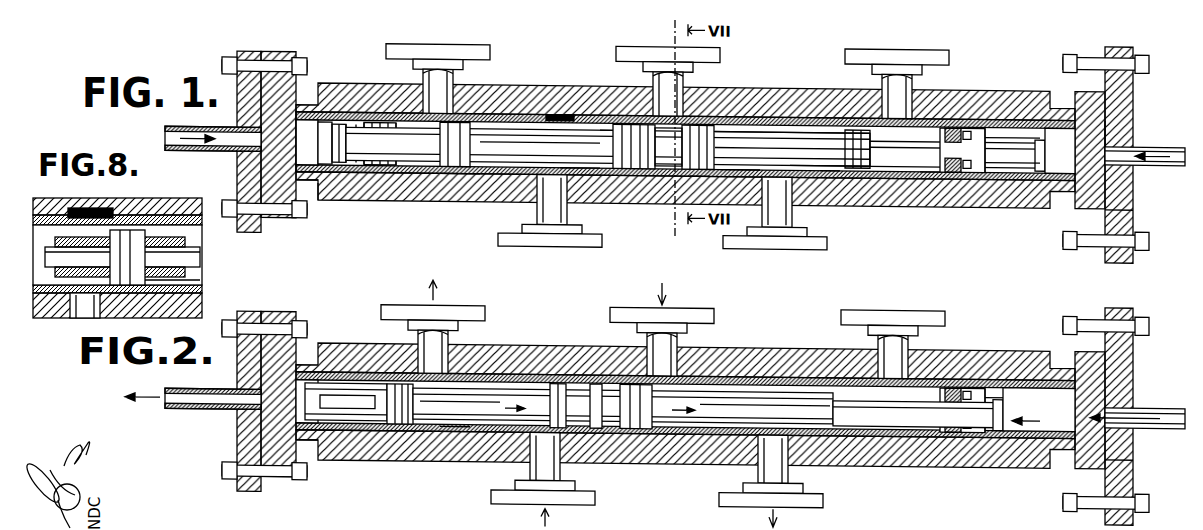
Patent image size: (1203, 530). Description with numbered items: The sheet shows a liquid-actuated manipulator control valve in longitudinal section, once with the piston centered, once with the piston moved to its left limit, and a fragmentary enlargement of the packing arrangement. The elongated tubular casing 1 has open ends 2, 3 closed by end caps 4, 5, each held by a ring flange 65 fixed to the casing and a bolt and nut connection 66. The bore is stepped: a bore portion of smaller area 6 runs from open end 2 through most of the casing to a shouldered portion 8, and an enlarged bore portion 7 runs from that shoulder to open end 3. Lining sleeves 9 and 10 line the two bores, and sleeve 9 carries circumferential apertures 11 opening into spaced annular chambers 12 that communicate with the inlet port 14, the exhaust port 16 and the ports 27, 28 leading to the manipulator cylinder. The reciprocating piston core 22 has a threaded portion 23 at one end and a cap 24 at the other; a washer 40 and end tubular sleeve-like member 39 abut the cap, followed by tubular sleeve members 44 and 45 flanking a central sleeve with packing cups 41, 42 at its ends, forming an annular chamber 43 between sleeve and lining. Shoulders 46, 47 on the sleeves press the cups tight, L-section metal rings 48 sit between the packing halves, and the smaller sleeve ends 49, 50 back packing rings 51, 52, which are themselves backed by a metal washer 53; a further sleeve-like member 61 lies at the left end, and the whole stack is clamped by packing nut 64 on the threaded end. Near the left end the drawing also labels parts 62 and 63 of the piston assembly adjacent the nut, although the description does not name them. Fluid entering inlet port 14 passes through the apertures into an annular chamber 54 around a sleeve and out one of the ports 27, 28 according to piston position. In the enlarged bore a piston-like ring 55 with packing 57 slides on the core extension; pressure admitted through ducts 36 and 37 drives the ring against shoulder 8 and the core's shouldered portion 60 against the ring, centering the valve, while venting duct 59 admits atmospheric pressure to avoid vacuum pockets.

In FIG. 1, the casing 1 is at (367, 197).
In FIG. 2, the casing 1 is at (1024, 462).
In FIG. 1, the open end 2 is at (262, 159).
In FIG. 1, the open end 3 is at (1128, 176).
In FIG. 2, the open end 3 is at (1118, 366).
In FIG. 1, the end cap 4 is at (258, 222).
In FIG. 2, the end cap 4 is at (245, 442).
In FIG. 1, the end cap 5 is at (1128, 201).
In FIG. 2, the end cap 5 is at (1125, 451).
In FIG. 1, the bore portion of smaller area 6 is at (292, 125).
In FIG. 2, the bore portion of smaller area 6 is at (232, 382).
In FIG. 1, the enlarged bore portion 7 is at (1112, 113).
In FIG. 2, the enlarged bore portion 7 is at (998, 450).
In FIG. 1, the shouldered portion 8 is at (956, 130).
In FIG. 2, the shouldered portion 8 is at (954, 398).
In FIG. 1, the lining sleeve 9 is at (397, 165).
In FIG. 1, the lining sleeve 10 is at (1014, 210).
In FIG. 1, the apertures 11 is at (556, 112).
In FIG. 8, the apertures 11 is at (98, 210).
In FIG. 2, the apertures 11 is at (407, 438).
In FIG. 1, the annular chambers 12 is at (525, 118).
In FIG. 8, the annular chambers 12 is at (68, 217).
In FIG. 2, the annular chambers 12 is at (534, 376).
In FIG. 1, the inlet port 14 is at (680, 73).
In FIG. 2, the inlet port 14 is at (678, 336).
In FIG. 1, the exhaust port 16 is at (450, 72).
In FIG. 2, the exhaust port 16 is at (400, 329).
In FIG. 1, the piston core 22 is at (873, 168).
In FIG. 8, the piston core 22 is at (185, 260).
In FIG. 2, the piston core 22 is at (850, 388).
In FIG. 1, the threaded portion 23 is at (300, 205).
In FIG. 2, the threaded portion 23 is at (250, 418).
In FIG. 1, the cap 24 is at (1058, 145).
In FIG. 2, the cap 24 is at (990, 410).
In FIG. 1, the port 27 is at (548, 214).
In FIG. 2, the port 27 is at (528, 474).
In FIG. 1, the port 28 is at (780, 226).
In FIG. 2, the port 28 is at (795, 472).
In FIG. 1, the duct 36 is at (1142, 141).
In FIG. 2, the duct 36 is at (1136, 399).
In FIG. 1, the duct 37 is at (222, 131).
In FIG. 2, the duct 37 is at (172, 409).
In FIG. 1, the tubular sleeve-like member 39 is at (1002, 120).
In FIG. 2, the tubular sleeve-like member 39 is at (854, 468).
In FIG. 1, the washer 40 is at (1032, 96).
In FIG. 2, the washer 40 is at (1008, 370).
In FIG. 1, the packing cup 41 is at (700, 200).
In FIG. 2, the packing cup 41 is at (602, 381).
In FIG. 1, the packing cup 42 is at (630, 168).
In FIG. 8, the packing cup 42 is at (138, 228).
In FIG. 2, the packing cup 42 is at (556, 383).
In FIG. 1, the annular chamber 43 is at (660, 200).
In FIG. 1, the tubular sleeve member 44 is at (742, 140).
In FIG. 2, the tubular sleeve member 44 is at (730, 398).
In FIG. 1, the tubular sleeve member 45 is at (588, 138).
In FIG. 8, the tubular sleeve member 45 is at (190, 283).
In FIG. 2, the tubular sleeve member 45 is at (480, 398).
In FIG. 1, the shoulder 46 is at (742, 188).
In FIG. 1, the shoulder 47 is at (582, 186).
In FIG. 1, the metal ring 48 is at (720, 130).
In FIG. 1, the end of sleeve 49 is at (792, 140).
In FIG. 1, the end of sleeve 50 is at (472, 124).
In FIG. 1, the packing ring 51 is at (822, 175).
In FIG. 1, the packing ring 52 is at (458, 190).
In FIG. 1, the metal washer 53 is at (850, 165).
In FIG. 8, the annular chamber 54 is at (68, 310).
In FIG. 2, the annular chamber 54 is at (455, 443).
In FIG. 1, the piston-like ring 55 is at (966, 135).
In FIG. 2, the piston-like ring 55 is at (966, 390).
In FIG. 1, the packing 57 is at (1002, 95).
In FIG. 1, the venting duct 59 is at (925, 192).
In FIG. 2, the venting duct 59 is at (920, 441).
In FIG. 1, the shouldered portion 60 is at (950, 130).
In FIG. 2, the shouldered portion 60 is at (851, 398).
In FIG. 1, the tubular sleeve-like member 61 is at (388, 190).
In FIG. 2, the tubular sleeve-like member 61 is at (345, 461).
In FIG. 1, the piston head 62 is at (356, 118).
In FIG. 1, the shoulder 63 is at (345, 200).
In FIG. 1, the packing nut 64 is at (342, 120).
In FIG. 1, the ring flange 65 is at (275, 52).
In FIG. 2, the ring flange 65 is at (275, 315).
In FIG. 1, the bolt and nut connection 66 is at (1112, 232).